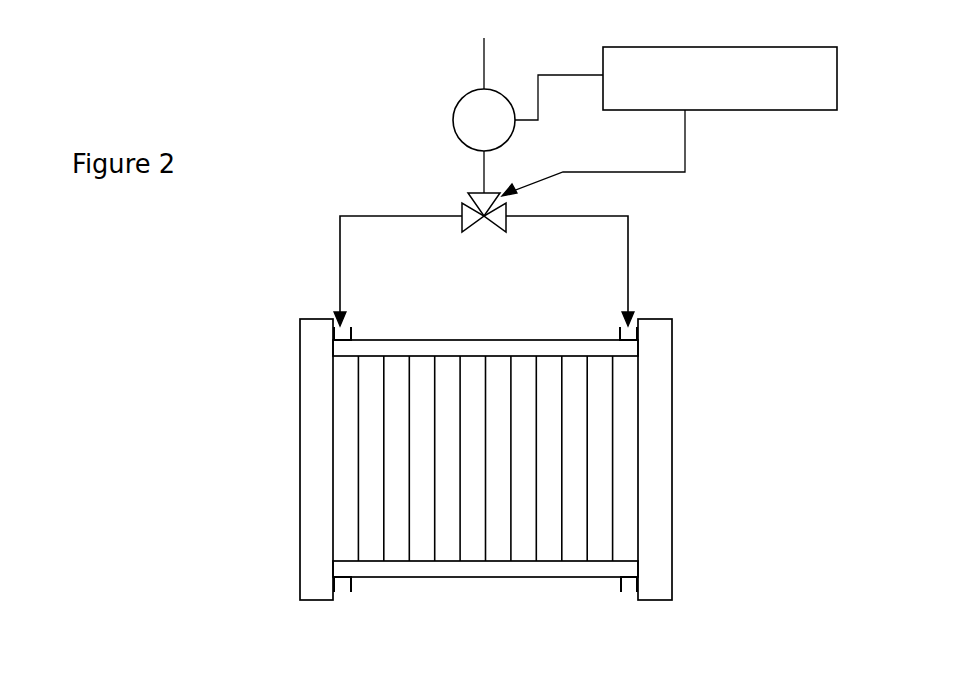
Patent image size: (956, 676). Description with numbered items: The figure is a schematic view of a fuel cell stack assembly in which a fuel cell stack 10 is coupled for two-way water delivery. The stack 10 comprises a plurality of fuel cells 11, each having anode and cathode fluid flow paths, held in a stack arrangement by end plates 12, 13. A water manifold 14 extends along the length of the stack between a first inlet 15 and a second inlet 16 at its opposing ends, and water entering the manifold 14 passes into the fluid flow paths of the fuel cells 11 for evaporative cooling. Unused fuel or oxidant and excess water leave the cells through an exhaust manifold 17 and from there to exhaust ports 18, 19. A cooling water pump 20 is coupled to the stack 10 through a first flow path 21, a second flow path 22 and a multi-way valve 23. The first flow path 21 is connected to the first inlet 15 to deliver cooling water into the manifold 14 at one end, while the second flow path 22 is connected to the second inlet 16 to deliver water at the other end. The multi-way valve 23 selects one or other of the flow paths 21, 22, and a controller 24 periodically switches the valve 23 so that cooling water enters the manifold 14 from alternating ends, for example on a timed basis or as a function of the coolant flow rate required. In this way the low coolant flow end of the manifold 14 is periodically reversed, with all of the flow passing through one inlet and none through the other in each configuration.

The fuel cell stack 10 is at (214, 326).
The fuel cells 11 is at (435, 365).
The end plate 12 is at (312, 443).
The end plate 13 is at (660, 440).
The manifold 14 is at (384, 347).
The first inlet 15 is at (352, 328).
The second inlet 16 is at (620, 330).
The exhaust manifold 17 is at (485, 570).
The exhaust port 18 is at (350, 590).
The exhaust port 19 is at (622, 587).
The cooling water pump 20 is at (453, 118).
The first flow path 21 is at (340, 255).
The second flow path 22 is at (628, 267).
The multi-way valve 23 is at (463, 213).
The controller 24 is at (742, 110).